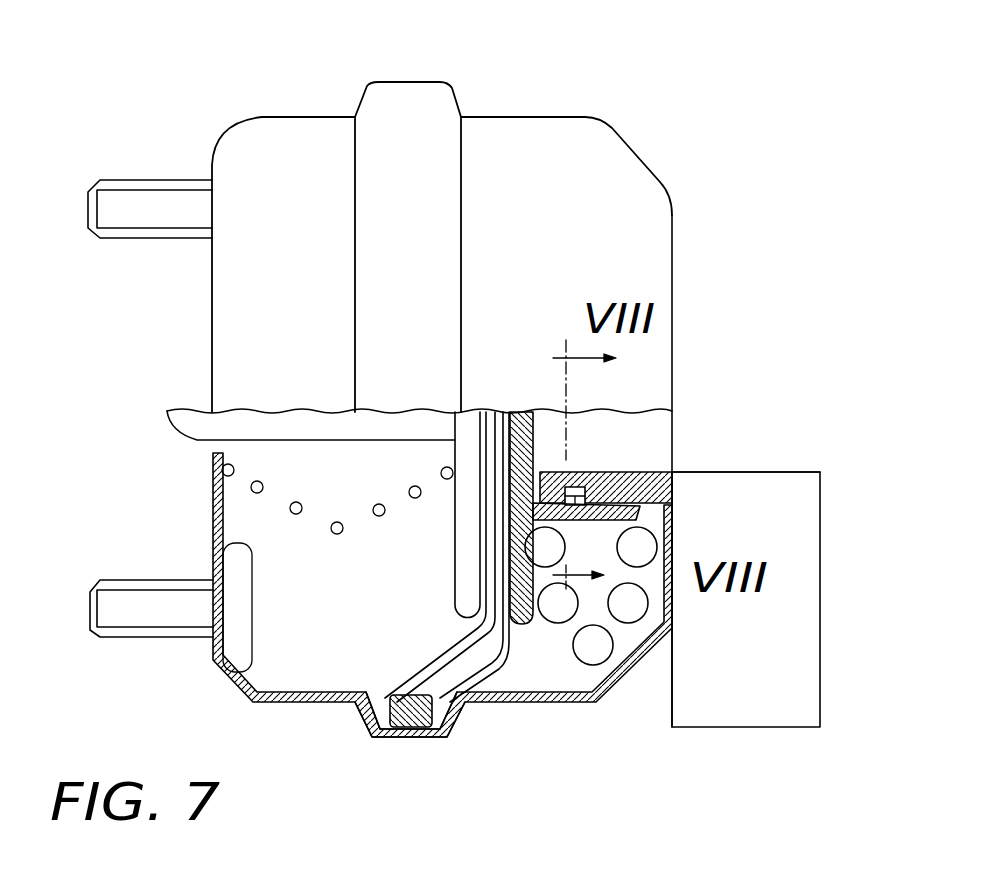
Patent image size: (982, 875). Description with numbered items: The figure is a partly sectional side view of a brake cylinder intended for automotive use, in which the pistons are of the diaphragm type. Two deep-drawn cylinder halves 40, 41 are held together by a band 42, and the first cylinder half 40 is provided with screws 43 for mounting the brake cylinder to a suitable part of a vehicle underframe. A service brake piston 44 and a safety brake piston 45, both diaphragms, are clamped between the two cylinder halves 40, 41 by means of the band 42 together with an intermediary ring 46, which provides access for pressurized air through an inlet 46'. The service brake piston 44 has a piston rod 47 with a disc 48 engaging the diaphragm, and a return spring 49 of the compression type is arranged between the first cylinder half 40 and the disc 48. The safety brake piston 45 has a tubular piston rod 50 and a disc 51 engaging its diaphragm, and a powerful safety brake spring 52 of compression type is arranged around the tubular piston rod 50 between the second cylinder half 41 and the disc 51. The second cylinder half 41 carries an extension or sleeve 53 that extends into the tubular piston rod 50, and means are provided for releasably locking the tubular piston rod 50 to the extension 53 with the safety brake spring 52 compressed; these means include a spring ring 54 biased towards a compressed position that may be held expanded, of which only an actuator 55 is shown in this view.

The first cylinder half 40 is at (280, 125).
The second cylinder half 41 is at (523, 137).
The band 42 is at (403, 95).
The screws 43 is at (132, 202).
The service brake piston 44 is at (413, 667).
The safety brake piston 45 is at (498, 672).
The intermediary ring 46 is at (387, 756).
The inlet 46' is at (422, 758).
The piston rod 47 is at (197, 427).
The disc 48 is at (455, 577).
The return spring 49 is at (252, 490).
The tubular piston rod 50 is at (647, 510).
The disc 51 is at (523, 613).
The safety brake spring 52 is at (600, 655).
The extension or sleeve 53 is at (620, 475).
The spring ring 54 is at (573, 493).
The actuator 55 is at (803, 505).